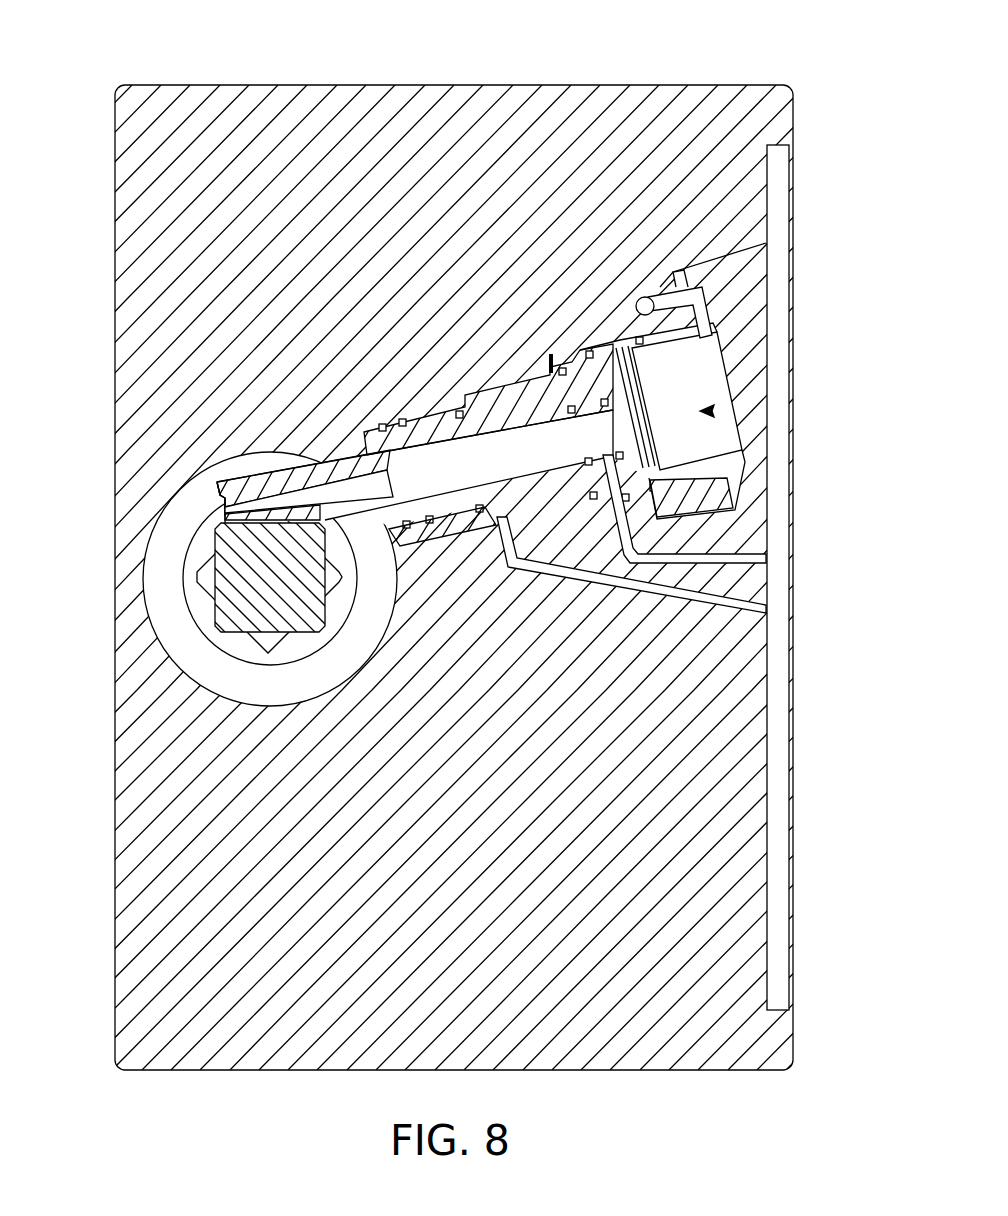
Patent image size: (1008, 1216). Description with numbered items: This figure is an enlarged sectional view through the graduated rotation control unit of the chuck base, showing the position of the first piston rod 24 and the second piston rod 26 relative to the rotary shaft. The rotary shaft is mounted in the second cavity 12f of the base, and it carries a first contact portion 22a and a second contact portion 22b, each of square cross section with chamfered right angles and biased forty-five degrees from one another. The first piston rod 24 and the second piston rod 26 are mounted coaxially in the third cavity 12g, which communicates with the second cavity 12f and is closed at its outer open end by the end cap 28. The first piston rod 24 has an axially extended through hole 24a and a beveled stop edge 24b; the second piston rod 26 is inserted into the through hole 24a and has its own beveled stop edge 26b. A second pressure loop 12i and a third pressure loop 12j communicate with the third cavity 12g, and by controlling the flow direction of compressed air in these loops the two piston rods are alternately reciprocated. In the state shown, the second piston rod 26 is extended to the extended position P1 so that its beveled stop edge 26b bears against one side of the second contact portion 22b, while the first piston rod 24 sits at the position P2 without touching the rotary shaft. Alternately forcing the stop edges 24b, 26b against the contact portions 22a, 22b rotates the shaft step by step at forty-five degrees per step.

The second cavity 12f is at (200, 697).
The third cavity 12g is at (487, 378).
The second pressure loop 12i is at (724, 560).
The third pressure loop 12j is at (645, 297).
The first contact portion 22a is at (207, 577).
The second contact portion 22b is at (220, 607).
The first piston rod 24 is at (420, 425).
The axially extended through hole 24a is at (330, 440).
The beveled stop edge 24b is at (220, 540).
The second piston rod 26 is at (525, 453).
The beveled stop edge 26b is at (225, 510).
The end cap 28 is at (750, 319).
The extended position P1 is at (712, 411).
The position P2 is at (551, 355).